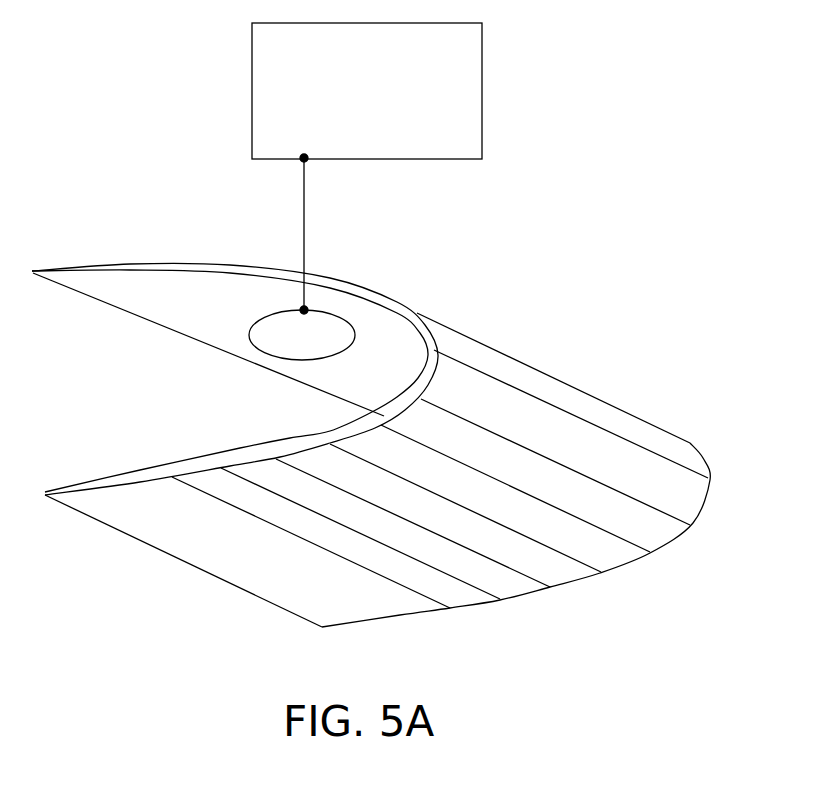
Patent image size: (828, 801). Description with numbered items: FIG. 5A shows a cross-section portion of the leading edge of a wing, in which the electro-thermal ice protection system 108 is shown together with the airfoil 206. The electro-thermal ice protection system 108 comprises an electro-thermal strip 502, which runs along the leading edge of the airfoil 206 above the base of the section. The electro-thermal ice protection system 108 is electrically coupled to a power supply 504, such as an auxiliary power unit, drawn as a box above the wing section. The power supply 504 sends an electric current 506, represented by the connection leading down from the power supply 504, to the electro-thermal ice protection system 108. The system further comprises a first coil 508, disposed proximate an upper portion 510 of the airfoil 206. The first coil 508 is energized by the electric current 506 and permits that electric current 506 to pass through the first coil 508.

The electro-thermal ice protection system 108 is at (79, 159).
The airfoil 206 is at (423, 615).
The electro-thermal strip 502 is at (570, 407).
The power supply 504 is at (468, 40).
The electric current 506 is at (305, 235).
The first coil 508 is at (278, 348).
The upper portion 510 is at (158, 321).